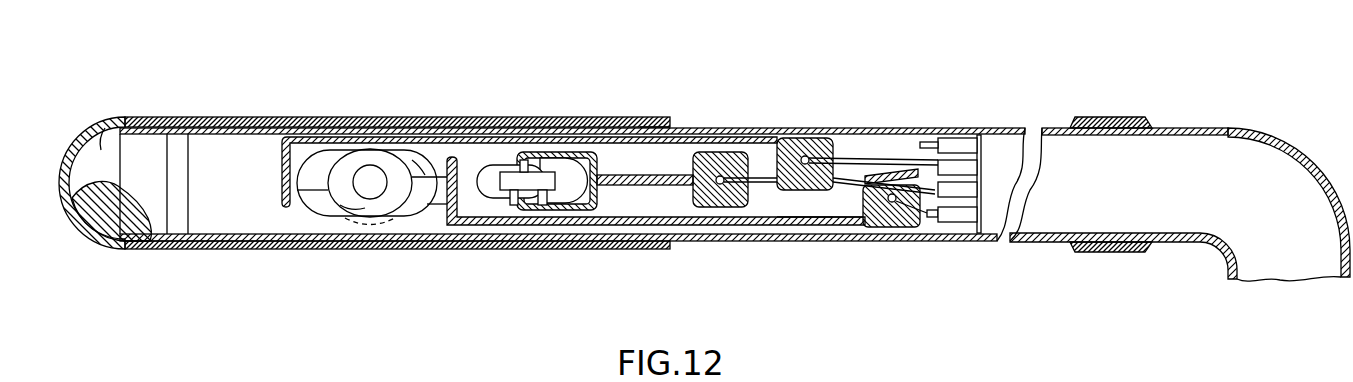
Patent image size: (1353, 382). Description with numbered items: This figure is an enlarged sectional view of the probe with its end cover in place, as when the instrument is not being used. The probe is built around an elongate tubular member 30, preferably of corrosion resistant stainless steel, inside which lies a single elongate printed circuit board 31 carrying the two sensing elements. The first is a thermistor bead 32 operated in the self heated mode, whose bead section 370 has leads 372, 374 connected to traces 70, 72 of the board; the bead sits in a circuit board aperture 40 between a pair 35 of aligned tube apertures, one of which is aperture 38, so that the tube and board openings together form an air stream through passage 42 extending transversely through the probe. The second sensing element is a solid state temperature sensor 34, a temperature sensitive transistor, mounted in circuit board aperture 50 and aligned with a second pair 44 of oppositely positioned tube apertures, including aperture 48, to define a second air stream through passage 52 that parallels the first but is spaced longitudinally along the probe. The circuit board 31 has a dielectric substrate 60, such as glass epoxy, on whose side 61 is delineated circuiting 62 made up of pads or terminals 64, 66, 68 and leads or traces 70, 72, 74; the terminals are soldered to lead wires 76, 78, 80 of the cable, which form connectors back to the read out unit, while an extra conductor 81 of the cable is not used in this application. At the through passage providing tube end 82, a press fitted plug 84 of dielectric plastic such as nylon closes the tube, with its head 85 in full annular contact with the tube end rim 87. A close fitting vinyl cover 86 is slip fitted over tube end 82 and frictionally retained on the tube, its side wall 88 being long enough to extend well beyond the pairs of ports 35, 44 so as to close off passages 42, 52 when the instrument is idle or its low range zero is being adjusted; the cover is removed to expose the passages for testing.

The elongate tubular member 30 is at (977, 243).
The printed circuit board 31 is at (680, 128).
The thermistor bead 32 is at (385, 155).
The solid state temperature sensor 34 is at (537, 160).
The pair of aligned apertures 35 is at (342, 160).
The aperture 38 is at (352, 205).
The circuit board aperture 40 is at (320, 210).
The air stream through passage 42 is at (424, 160).
The pair of oppositely positioned apertures 44 is at (490, 162).
The aperture 48 is at (495, 202).
The circuit board aperture 50 is at (514, 160).
The second air stream through passage 52 is at (567, 163).
The substrate 60 is at (768, 152).
The side 61 is at (780, 207).
The circuiting 62 is at (716, 246).
The terminal 64 is at (880, 227).
The terminal 66 is at (838, 158).
The terminal 68 is at (735, 207).
The trace 70 is at (825, 224).
The trace 72 is at (698, 143).
The trace 74 is at (628, 222).
The lead wire 76 is at (930, 221).
The lead wire 78 is at (880, 176).
The lead wire 80 is at (905, 163).
The extra conductor 81 is at (928, 143).
The tube end 82 is at (157, 117).
The plug 84 is at (120, 250).
The head 85 is at (101, 150).
The cover 86 is at (285, 112).
The tube end rim 87 is at (110, 117).
The side wall 88 is at (640, 118).
The bead section 370 is at (380, 190).
The lead 372 is at (310, 195).
The lead 374 is at (433, 205).